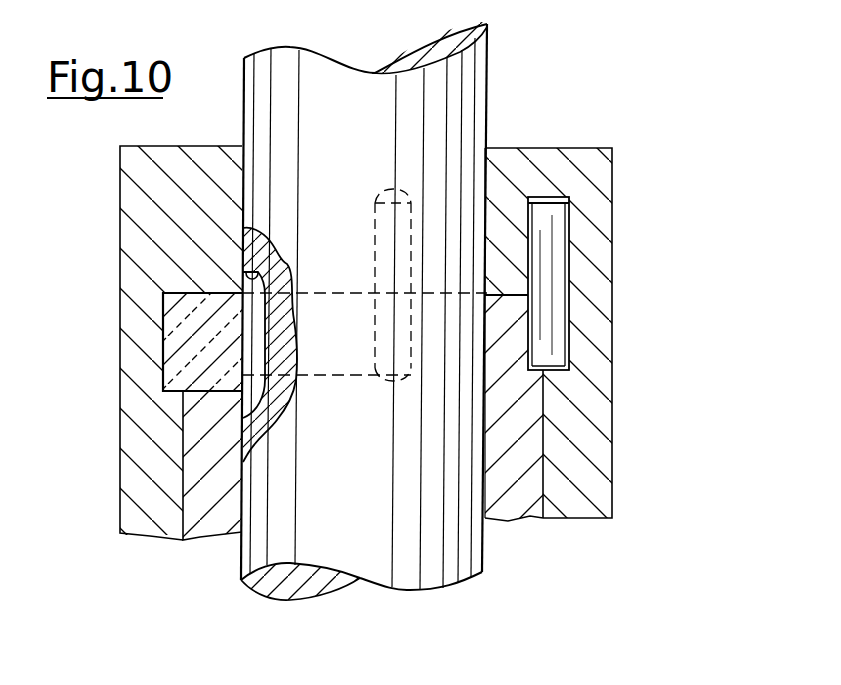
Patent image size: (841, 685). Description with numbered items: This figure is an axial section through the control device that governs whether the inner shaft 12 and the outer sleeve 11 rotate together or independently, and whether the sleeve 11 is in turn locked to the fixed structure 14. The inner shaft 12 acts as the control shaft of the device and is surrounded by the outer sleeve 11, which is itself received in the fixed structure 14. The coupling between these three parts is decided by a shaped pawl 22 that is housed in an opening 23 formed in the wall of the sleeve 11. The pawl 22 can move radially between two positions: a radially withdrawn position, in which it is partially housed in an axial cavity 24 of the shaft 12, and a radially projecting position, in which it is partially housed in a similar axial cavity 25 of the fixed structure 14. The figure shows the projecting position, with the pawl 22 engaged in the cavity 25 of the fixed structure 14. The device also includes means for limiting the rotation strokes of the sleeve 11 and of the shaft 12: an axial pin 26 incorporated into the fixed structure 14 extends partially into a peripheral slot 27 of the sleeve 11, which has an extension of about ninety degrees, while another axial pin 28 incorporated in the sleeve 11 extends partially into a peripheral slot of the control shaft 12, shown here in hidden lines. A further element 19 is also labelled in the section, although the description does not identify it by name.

The outer sleeve 11 is at (513, 496).
The inner shaft 12 is at (462, 96).
The fixed structure 14 is at (596, 380).
The bore 19 is at (333, 372).
The shaped pawl 22 is at (187, 359).
The opening 23 is at (217, 395).
The axial cavity 24 is at (256, 277).
The axial cavity 25 is at (163, 323).
The axial pin 26 is at (551, 256).
The peripheral slot 27 is at (483, 377).
The axial pin 28 is at (411, 225).